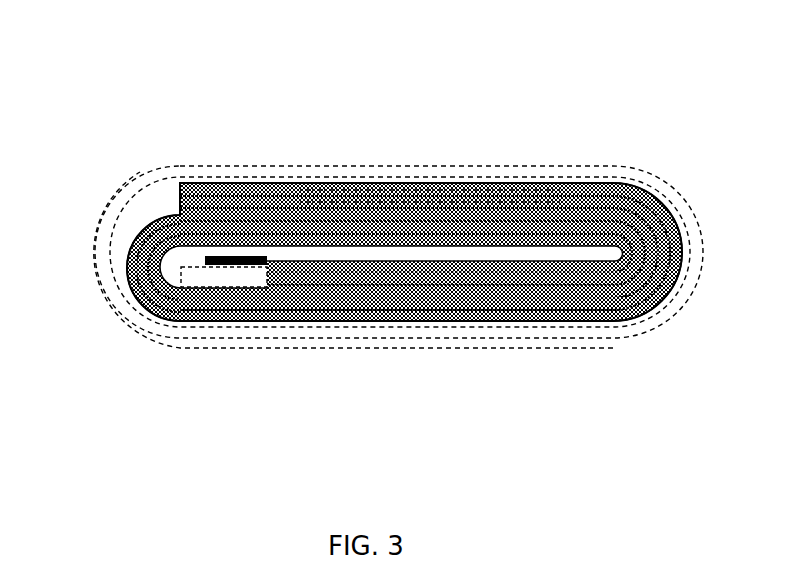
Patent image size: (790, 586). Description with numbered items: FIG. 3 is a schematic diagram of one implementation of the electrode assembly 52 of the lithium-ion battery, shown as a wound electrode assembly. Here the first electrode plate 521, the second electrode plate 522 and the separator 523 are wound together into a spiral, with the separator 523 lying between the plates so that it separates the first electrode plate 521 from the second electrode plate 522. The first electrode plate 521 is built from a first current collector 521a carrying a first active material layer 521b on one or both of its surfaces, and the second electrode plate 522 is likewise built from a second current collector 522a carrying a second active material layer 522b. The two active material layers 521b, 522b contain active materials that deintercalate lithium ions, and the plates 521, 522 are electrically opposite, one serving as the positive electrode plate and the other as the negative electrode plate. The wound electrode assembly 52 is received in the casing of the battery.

The electrode assembly 52 is at (78, 42).
The first electrode plate 521 is at (180, 203).
The first current collector 521a is at (480, 202).
The first active material layer 521b is at (462, 202).
The second electrode plate 522 is at (180, 185).
The second current collector 522a is at (257, 202).
The second active material layer 522b is at (242, 202).
The separator 523 is at (182, 268).